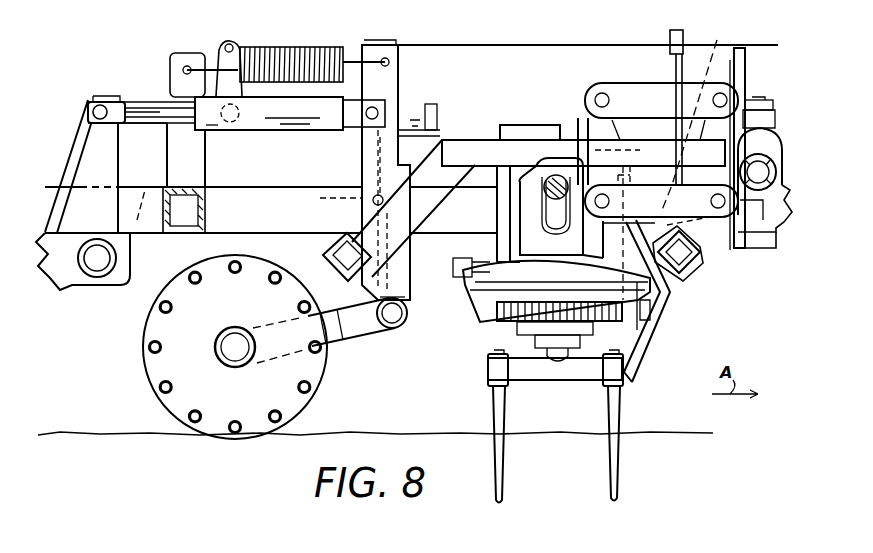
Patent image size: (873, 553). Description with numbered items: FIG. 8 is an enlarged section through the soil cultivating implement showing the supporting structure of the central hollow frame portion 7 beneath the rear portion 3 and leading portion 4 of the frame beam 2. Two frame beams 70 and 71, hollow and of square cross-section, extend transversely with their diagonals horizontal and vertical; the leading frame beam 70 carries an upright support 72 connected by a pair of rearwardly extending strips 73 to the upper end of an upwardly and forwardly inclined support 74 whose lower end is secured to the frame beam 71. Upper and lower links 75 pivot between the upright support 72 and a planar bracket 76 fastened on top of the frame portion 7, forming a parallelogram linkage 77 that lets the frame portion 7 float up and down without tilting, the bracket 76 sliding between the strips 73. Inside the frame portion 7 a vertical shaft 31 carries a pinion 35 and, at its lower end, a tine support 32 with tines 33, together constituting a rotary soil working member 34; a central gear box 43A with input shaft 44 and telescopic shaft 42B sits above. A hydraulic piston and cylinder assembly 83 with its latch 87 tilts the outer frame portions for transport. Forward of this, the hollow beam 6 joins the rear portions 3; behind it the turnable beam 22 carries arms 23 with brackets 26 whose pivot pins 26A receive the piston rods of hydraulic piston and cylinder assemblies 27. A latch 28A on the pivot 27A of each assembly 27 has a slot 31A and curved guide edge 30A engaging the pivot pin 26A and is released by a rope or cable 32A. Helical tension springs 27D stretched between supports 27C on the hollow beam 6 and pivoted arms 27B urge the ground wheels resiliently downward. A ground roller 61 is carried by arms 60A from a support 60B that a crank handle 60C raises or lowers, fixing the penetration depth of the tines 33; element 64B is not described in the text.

The beam 2 is at (326, 182).
The rear portion 3 is at (275, 192).
The leading portion 4 is at (770, 246).
The hollow beam 6 is at (208, 186).
The central hollow frame portion 7 is at (594, 282).
The horizontal beam 22 is at (98, 280).
The arm 23 is at (66, 300).
The bracket 26 is at (74, 144).
The pivot pin 26A is at (100, 92).
The hydraulic piston and cylinder assembly 27 is at (312, 132).
The pivot 27A is at (232, 124).
The arm 27B is at (392, 43).
The support 27C is at (188, 53).
The helical tension spring 27D is at (290, 46).
The latch 28A is at (140, 96).
The curved guide edge 30A is at (72, 104).
The shaft 31 is at (546, 276).
The slot 31A is at (106, 128).
The tine support 32 is at (574, 372).
The rope or cable 32A is at (555, 44).
The tine 33 is at (500, 464).
The rotary soil working member 34 is at (488, 400).
The pinion 35 is at (500, 318).
The telescopic shaft 42B is at (540, 205).
The central gear box 43A is at (514, 126).
The rotary input shaft 44 is at (664, 118).
The arm 60A is at (366, 344).
The support 60B is at (412, 320).
The crank handle 60C is at (446, 88).
The ground roller 61 is at (140, 368).
The guide bracket 64B is at (644, 364).
The leading frame beam 70 is at (698, 268).
The frame beam 71 is at (334, 226).
The upright support 72 is at (706, 242).
The strip 73 is at (486, 140).
The inclined support 74 is at (426, 192).
The link 75 is at (634, 96).
The bracket 76 is at (580, 104).
The parallelogram linkage 77 is at (692, 76).
The hydraulic piston and cylinder assembly 83 is at (782, 130).
The latch 87 is at (740, 46).